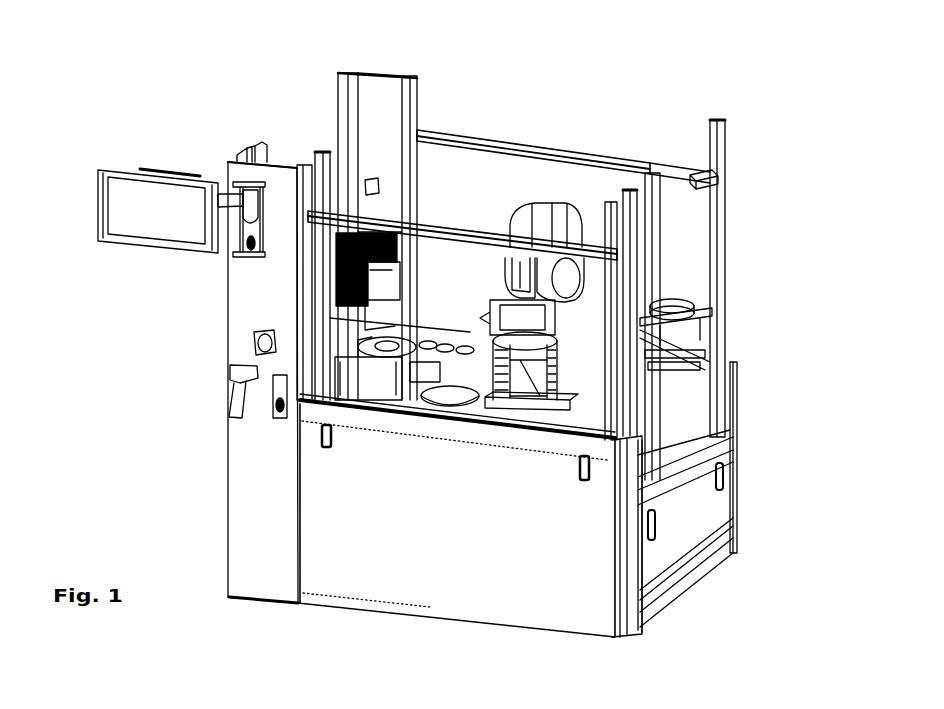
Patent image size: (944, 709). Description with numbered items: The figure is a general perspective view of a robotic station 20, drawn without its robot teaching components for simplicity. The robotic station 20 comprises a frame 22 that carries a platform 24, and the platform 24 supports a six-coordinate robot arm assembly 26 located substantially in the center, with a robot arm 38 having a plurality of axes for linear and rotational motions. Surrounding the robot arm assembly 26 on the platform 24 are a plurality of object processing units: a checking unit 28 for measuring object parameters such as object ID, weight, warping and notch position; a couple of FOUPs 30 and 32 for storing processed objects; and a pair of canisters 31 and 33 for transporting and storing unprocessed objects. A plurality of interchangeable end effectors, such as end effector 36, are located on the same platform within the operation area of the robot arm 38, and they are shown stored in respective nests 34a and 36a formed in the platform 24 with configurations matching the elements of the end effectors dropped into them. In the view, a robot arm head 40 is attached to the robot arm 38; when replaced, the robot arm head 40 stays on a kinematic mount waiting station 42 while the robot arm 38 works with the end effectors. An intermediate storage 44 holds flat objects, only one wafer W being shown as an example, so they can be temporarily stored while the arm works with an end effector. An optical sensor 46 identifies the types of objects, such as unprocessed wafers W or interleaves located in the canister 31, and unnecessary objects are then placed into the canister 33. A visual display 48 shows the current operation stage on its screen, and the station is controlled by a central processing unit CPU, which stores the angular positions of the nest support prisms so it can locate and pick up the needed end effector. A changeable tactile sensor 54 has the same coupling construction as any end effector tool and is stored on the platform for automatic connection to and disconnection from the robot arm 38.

The robotic station 20 is at (697, 89).
The frame 22 is at (725, 141).
The platform 24 is at (540, 407).
The six-coordinate robot arm assembly 26 is at (548, 184).
The checking unit 28 is at (340, 373).
The FOUP 30 is at (372, 180).
The canister 31 is at (680, 302).
The FOUP 32 is at (343, 292).
The canister 33 is at (700, 313).
The nest 34a is at (445, 343).
The end effector 36 is at (440, 362).
The nest 36a is at (466, 345).
The robot arm 38 is at (512, 215).
The robot arm head 40 is at (360, 383).
The kinematic mount waiting station 42 is at (392, 417).
The intermediate storage 44 is at (543, 413).
The optical sensor 46 is at (718, 185).
The visual display 48 is at (150, 185).
The changeable tactile sensor 54 is at (428, 340).
The wafer W is at (472, 400).
The central processing unit CPU is at (157, 173).